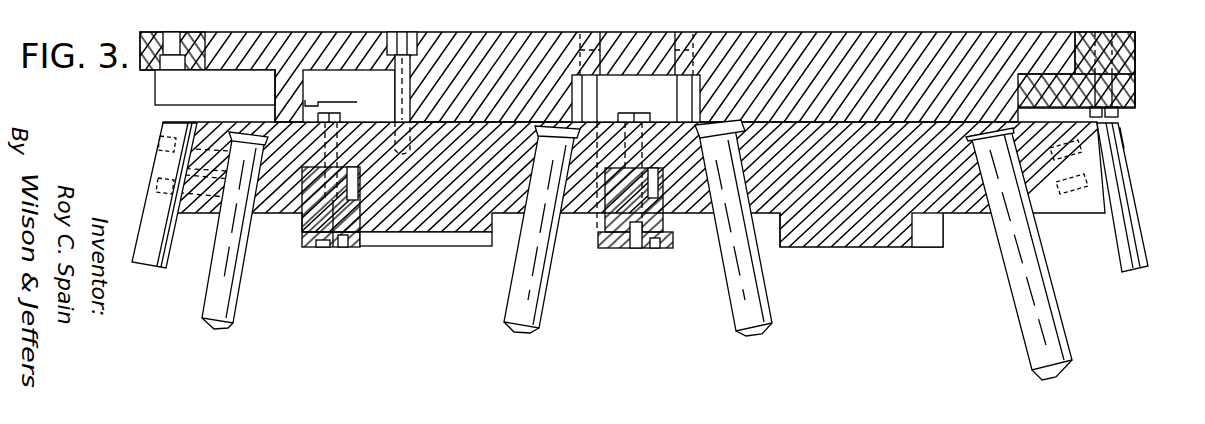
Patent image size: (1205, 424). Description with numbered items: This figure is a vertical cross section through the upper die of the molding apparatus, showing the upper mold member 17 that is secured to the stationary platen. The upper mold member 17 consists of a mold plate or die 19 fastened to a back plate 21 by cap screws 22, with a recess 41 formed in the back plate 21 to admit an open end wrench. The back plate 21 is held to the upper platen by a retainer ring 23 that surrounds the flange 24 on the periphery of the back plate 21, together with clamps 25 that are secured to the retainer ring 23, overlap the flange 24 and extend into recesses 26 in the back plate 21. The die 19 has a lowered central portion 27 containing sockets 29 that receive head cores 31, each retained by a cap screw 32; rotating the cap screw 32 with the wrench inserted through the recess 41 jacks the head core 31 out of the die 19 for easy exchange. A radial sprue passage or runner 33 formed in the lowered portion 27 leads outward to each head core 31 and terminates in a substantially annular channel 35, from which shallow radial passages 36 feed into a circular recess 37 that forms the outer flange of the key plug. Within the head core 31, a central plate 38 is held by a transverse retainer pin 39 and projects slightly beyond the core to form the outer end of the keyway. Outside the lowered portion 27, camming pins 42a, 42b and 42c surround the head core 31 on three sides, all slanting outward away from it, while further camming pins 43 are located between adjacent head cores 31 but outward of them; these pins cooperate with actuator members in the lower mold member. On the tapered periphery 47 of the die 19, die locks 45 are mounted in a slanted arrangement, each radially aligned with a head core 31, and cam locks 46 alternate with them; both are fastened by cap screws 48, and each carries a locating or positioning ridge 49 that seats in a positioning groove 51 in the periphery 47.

The upper mold member 17 is at (1141, 39).
The mold plate or die 19 is at (864, 174).
The back plate 21 is at (841, 20).
The cap screws 22 is at (400, 40).
The retainer ring 23 is at (1125, 53).
The flange 24 is at (250, 50).
The clamps 25 is at (165, 90).
The recesses 26 is at (252, 70).
The lowered central portion 27 is at (842, 243).
The sockets 29 is at (358, 213).
The head core 31 is at (300, 228).
The cap screw 32 is at (342, 107).
The radial sprue passage or runner 33 is at (426, 247).
The annular channel 35 is at (351, 249).
The shallow radial passages 36 is at (627, 249).
The circular recess 37 is at (318, 248).
The central plate 38 is at (337, 250).
The transverse retainer pin 39 is at (360, 232).
The recess 41 is at (312, 101).
The camming pin 42a is at (240, 300).
The camming pin 42b is at (516, 298).
The camming pin 42c is at (738, 288).
The camming pins 43 is at (1055, 299).
The die locks 45 is at (160, 236).
The cam locks 46 is at (1122, 216).
The tapered periphery 47 is at (197, 134).
The cap screws 48 is at (160, 141).
The locating or positioning ridge 49 is at (172, 190).
The positioning groove 51 is at (1062, 158).